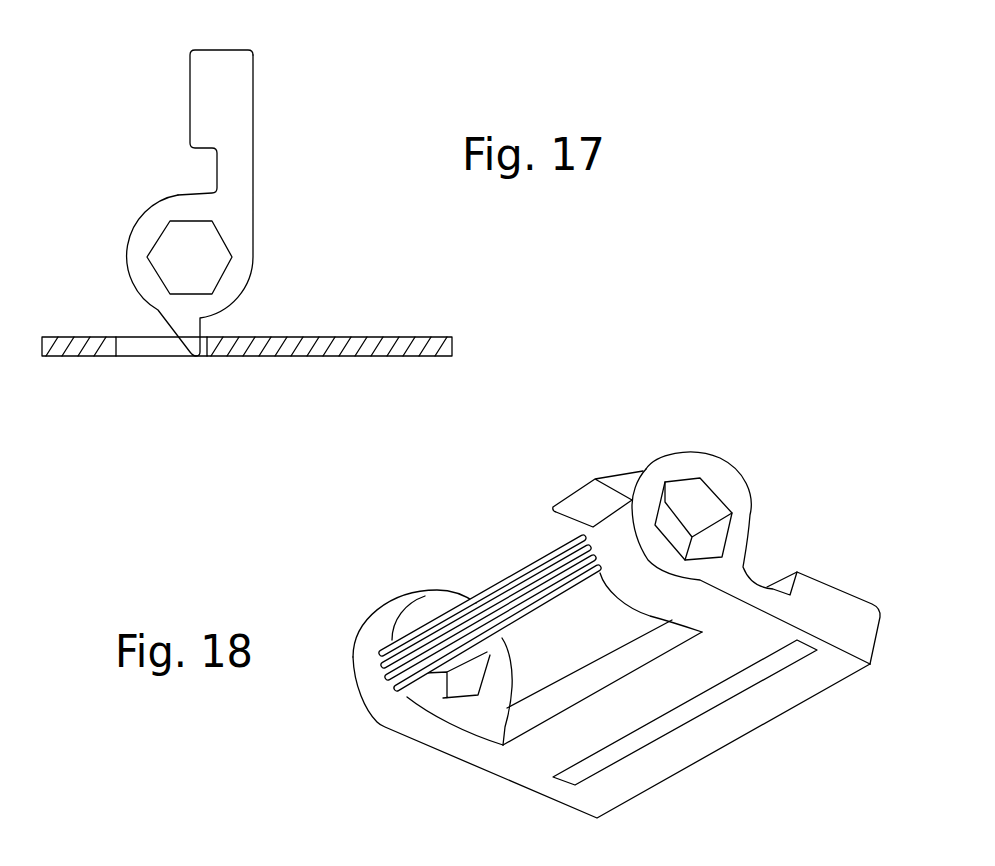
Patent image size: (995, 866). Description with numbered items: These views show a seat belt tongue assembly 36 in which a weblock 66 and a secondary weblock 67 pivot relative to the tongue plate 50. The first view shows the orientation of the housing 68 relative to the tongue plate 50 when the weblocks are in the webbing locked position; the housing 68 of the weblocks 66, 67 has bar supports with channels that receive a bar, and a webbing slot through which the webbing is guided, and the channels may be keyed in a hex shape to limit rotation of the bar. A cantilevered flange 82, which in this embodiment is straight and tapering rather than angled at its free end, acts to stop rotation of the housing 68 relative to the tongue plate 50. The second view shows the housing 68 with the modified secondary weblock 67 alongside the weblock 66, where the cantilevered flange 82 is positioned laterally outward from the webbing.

In FIG. 17, the tongue assembly 36 is at (283, 103).
In FIG. 17, the tongue plate 50 is at (330, 336).
In FIG. 18, the weblock 66 is at (735, 712).
In FIG. 18, the secondary weblock 67 is at (487, 572).
In FIG. 17, the housing 68 is at (222, 50).
In FIG. 18, the housing 68 is at (847, 583).
In FIG. 17, the cantilevered flange 82 is at (183, 342).
In FIG. 18, the cantilevered flange 82 is at (617, 476).